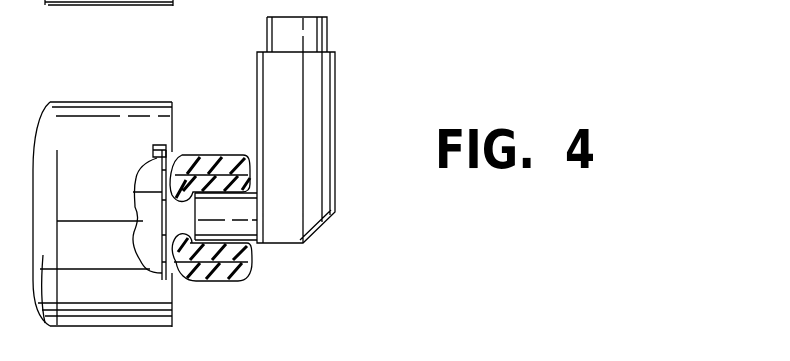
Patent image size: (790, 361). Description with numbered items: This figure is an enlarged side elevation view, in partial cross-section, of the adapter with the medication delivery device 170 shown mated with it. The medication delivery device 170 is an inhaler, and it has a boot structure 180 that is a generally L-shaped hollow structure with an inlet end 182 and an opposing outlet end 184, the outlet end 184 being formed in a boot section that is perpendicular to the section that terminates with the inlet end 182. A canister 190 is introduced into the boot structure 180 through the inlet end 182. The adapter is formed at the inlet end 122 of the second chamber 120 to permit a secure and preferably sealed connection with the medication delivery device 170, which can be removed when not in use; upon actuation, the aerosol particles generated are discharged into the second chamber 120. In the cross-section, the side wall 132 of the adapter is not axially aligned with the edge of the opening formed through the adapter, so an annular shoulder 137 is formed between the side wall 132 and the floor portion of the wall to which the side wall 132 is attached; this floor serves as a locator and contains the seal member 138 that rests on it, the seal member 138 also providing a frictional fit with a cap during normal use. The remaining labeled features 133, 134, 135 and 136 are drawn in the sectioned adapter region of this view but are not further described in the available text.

The second chamber 120 is at (72, 120).
The inlet end 122 is at (172, 157).
The side wall 132 is at (220, 128).
The body bore wall 133 is at (167, 257).
The body interior 134 is at (91, 166).
The seal lip 135 is at (212, 281).
The lower seal ring 136 is at (248, 258).
The annular shoulder 137 is at (72, 191).
The seal member 138 is at (242, 274).
The medication delivery device 170 is at (308, 92).
The boot structure 180 is at (237, 212).
The inlet end 182 is at (303, 50).
The outlet end 184 is at (172, 218).
The canister 190 is at (287, 28).